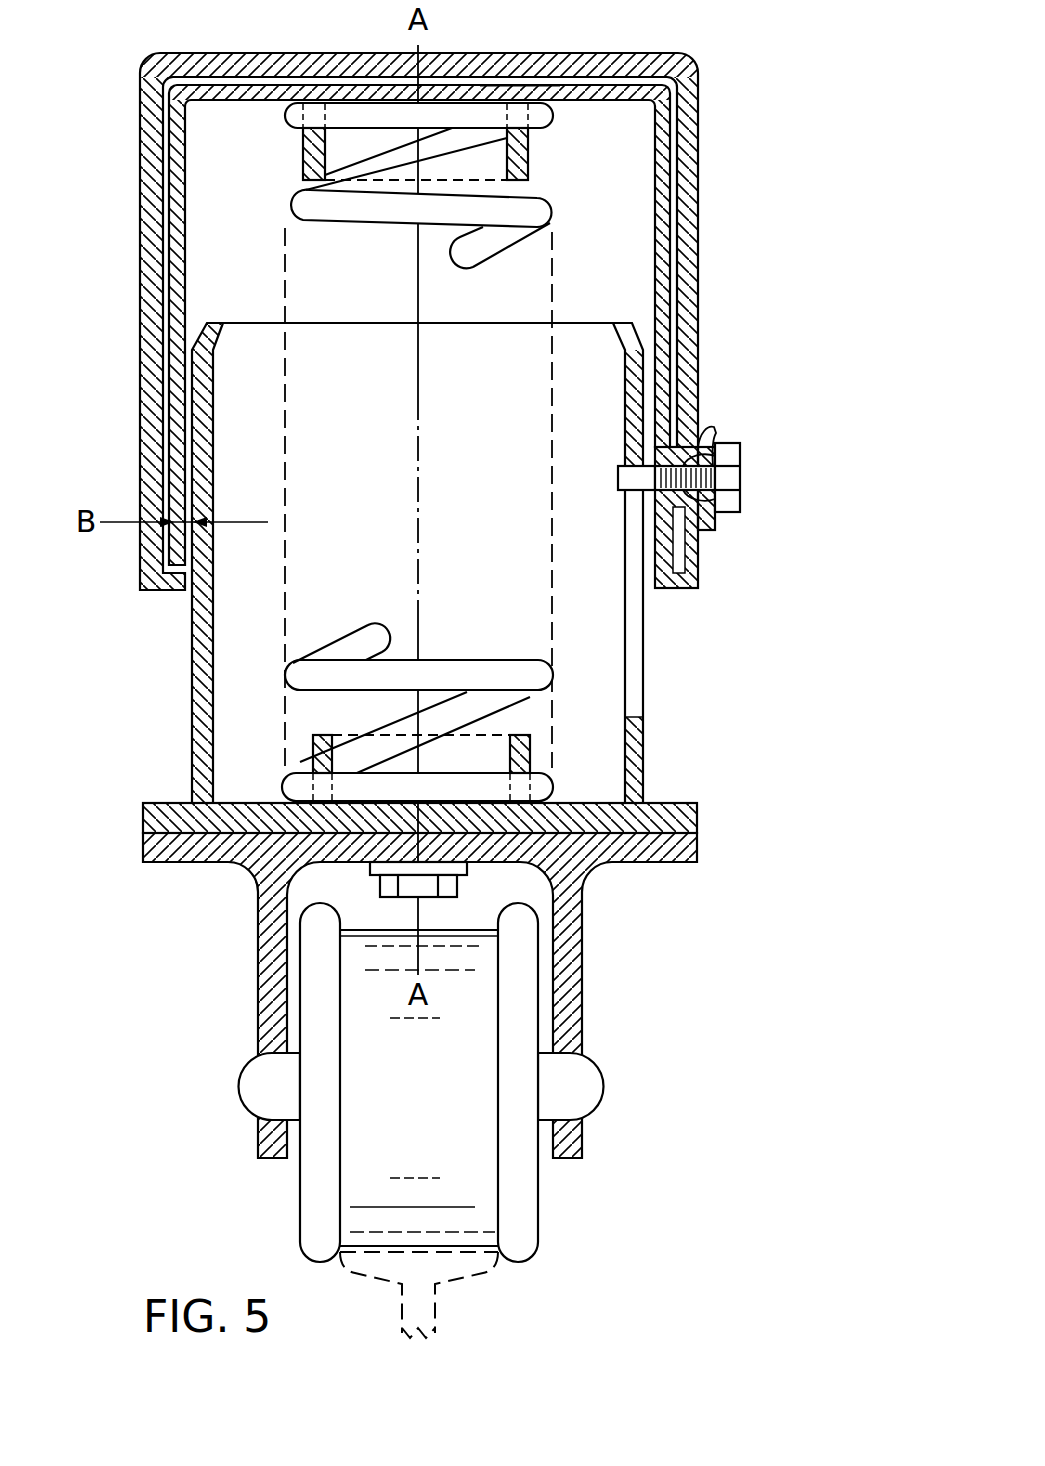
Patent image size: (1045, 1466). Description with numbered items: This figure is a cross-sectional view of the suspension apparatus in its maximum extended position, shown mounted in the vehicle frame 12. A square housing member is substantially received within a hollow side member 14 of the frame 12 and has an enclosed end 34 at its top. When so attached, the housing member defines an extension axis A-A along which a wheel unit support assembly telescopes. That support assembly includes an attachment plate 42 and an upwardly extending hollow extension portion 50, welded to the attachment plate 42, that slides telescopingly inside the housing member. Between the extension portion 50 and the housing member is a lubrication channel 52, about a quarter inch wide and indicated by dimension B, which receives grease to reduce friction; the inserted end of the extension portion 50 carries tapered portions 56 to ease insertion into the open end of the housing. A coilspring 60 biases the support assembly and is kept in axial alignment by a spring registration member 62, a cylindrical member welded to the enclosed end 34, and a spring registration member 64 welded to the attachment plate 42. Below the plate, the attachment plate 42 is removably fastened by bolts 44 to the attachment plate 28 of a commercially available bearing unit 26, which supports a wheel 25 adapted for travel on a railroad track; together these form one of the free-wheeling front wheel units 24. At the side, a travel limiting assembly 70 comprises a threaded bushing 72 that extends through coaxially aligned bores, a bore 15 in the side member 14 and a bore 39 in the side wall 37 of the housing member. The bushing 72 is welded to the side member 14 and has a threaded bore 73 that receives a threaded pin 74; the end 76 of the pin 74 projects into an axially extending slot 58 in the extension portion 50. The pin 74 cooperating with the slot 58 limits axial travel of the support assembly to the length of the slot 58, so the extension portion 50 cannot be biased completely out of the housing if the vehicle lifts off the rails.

The frame 12 is at (648, 39).
The hollow side member 14 is at (698, 175).
The enclosed end 34 is at (533, 92).
The spring registration member 62 is at (530, 152).
The coilspring 60 is at (553, 212).
The tapered portions 56 is at (196, 325).
The side wall 37 is at (700, 368).
The bore 15 is at (706, 430).
The threaded bore 73 is at (740, 461).
The threaded pin 74 is at (742, 486).
The threaded bushing 72 is at (718, 523).
The travel limiting assembly 70 is at (726, 542).
The end of pin 76 is at (618, 483).
The bore 39 is at (690, 589).
The hollow extension portion 50 is at (190, 421).
The lubrication channel 52 is at (186, 450).
The axially extending slot 58 is at (645, 712).
The spring registration member 64 is at (531, 747).
The attachment plate 42 is at (697, 809).
The attachment plate 28 is at (655, 863).
The bolts 44 is at (467, 888).
The bearing unit 26 is at (582, 958).
The wheel 25 is at (438, 1157).
The front wheel units 24 is at (602, 1034).